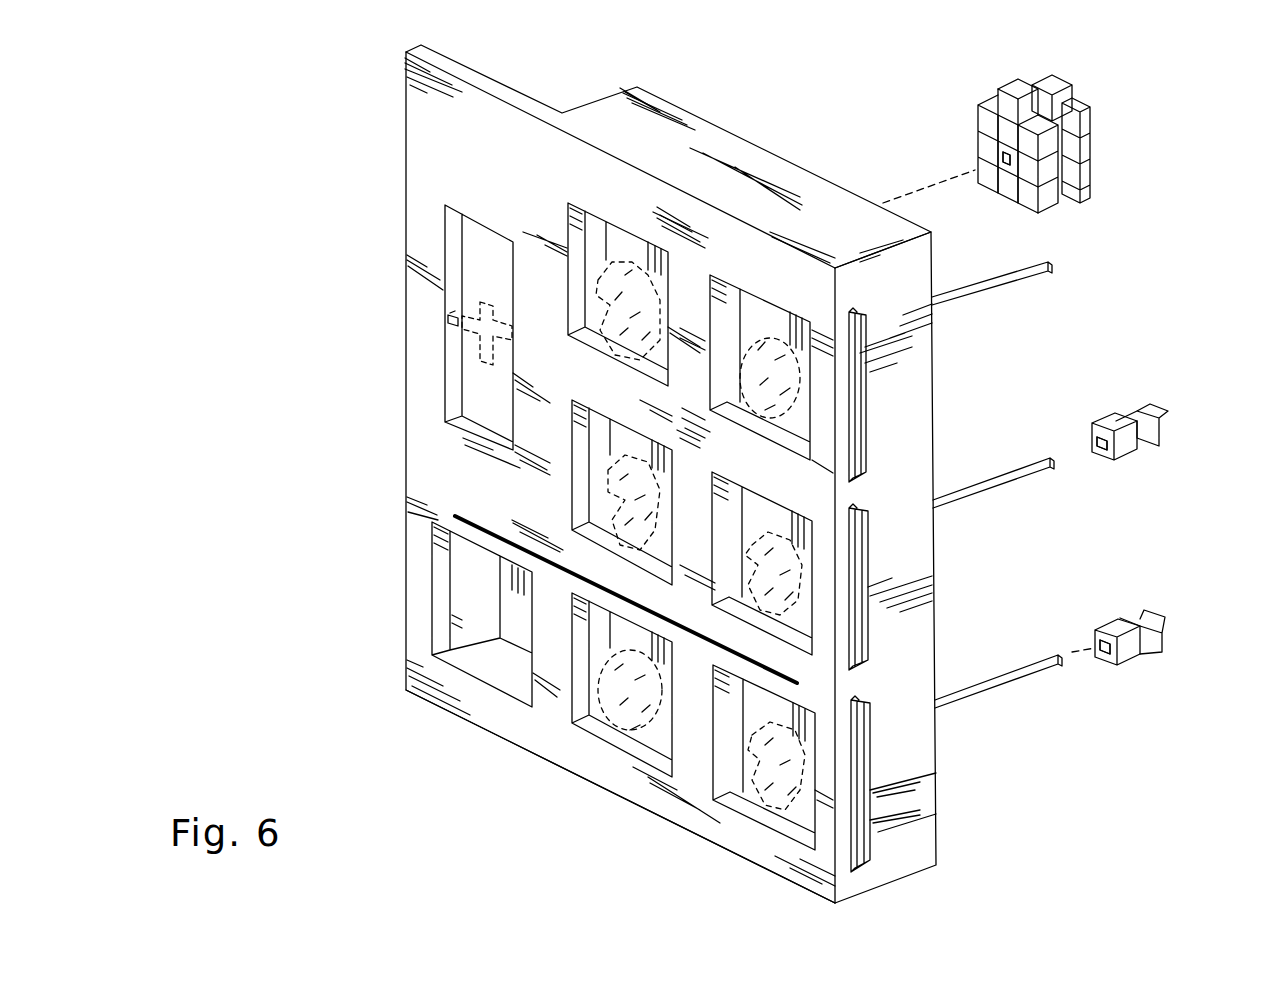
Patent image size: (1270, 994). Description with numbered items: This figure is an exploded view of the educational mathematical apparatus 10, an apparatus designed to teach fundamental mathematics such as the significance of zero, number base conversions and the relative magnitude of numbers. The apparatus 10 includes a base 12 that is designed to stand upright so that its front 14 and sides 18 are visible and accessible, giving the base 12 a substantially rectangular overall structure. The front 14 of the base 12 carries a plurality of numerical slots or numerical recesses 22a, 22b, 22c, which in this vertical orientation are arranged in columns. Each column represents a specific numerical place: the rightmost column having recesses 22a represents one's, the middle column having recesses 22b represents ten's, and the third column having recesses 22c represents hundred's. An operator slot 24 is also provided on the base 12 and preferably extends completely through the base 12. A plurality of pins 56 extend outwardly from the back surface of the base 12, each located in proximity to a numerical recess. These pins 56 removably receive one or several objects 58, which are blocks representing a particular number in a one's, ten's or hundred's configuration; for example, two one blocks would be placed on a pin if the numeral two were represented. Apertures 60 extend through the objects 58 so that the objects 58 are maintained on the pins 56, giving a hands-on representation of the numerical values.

The educational mathematical apparatus 10 is at (346, 104).
The base 12 is at (495, 705).
The front 14 is at (432, 460).
The sides 18 is at (915, 736).
The numerical recesses 22a is at (768, 318).
The numerical recesses 22b is at (627, 250).
The numerical recesses 22c is at (465, 565).
The operator slot 24 is at (470, 270).
The pins 56 is at (1025, 470).
The objects 58 is at (1012, 87).
The apertures 60 is at (1002, 155).